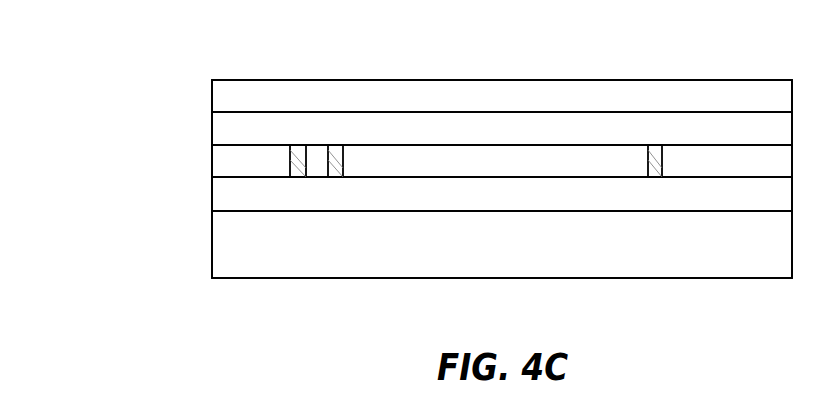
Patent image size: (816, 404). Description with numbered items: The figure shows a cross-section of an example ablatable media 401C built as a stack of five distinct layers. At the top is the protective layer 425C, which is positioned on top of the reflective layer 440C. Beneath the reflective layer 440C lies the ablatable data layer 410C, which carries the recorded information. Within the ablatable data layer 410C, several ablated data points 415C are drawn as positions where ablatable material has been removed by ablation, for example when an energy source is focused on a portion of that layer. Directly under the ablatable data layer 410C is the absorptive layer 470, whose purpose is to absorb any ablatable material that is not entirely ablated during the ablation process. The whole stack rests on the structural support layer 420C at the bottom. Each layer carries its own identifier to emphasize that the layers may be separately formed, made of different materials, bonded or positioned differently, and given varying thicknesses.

The ablatable media 401C is at (410, 148).
The ablated data points 415C is at (476, 98).
The protective layer 425C is at (615, 106).
The reflective layer 440C is at (613, 139).
The ablatable data layer 410C is at (630, 172).
The absorptive layer 470 is at (607, 204).
The structural support layer 420C is at (652, 256).